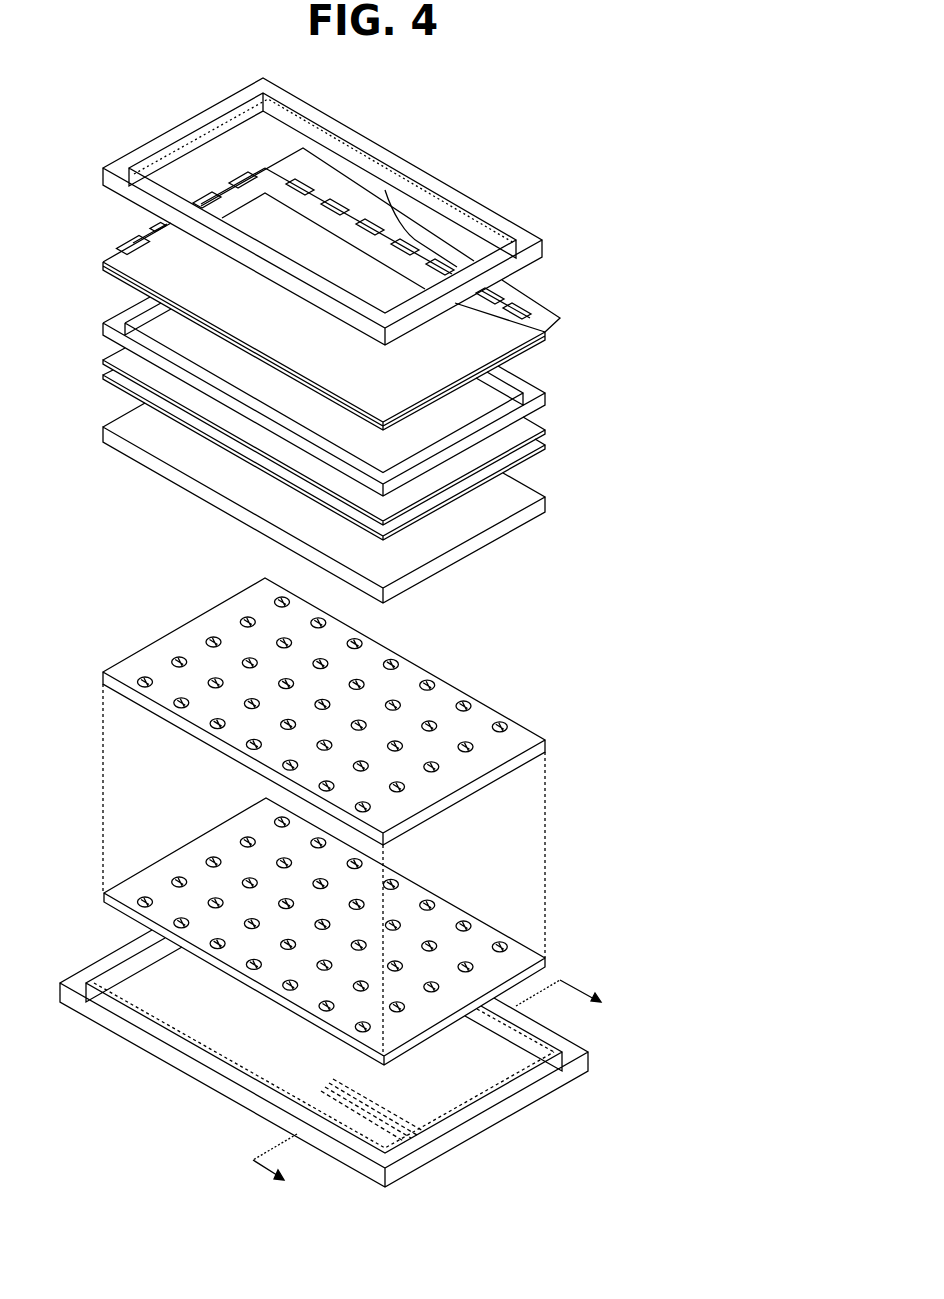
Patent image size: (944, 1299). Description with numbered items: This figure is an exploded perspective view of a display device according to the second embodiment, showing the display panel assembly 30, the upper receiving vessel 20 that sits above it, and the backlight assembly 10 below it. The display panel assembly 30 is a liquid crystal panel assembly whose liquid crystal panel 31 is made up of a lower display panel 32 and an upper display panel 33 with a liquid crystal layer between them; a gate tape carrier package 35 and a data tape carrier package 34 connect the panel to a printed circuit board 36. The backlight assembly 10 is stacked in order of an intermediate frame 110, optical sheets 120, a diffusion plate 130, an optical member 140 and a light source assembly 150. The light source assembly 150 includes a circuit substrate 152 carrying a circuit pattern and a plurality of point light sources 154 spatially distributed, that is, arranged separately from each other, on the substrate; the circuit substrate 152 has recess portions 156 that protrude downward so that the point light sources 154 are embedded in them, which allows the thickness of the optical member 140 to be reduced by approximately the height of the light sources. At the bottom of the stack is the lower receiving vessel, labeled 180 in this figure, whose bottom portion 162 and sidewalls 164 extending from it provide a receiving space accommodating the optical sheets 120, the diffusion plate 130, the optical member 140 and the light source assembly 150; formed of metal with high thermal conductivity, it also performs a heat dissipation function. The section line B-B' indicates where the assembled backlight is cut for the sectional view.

The backlight assembly 10 is at (368, 742).
The upper receiving vessel 20 is at (546, 246).
The display panel assembly 30 is at (368, 289).
The liquid crystal panel 31 is at (365, 289).
The lower display panel 32 is at (520, 338).
The upper display panel 33 is at (530, 348).
The data tape carrier package 34 is at (536, 305).
The gate tape carrier package 35 is at (120, 241).
The printed circuit board 36 is at (550, 322).
The intermediate frame 110 is at (548, 395).
The optical sheets 120 is at (550, 430).
The diffusion plate 130 is at (548, 499).
The optical member 140 is at (536, 720).
The light source assembly 150 is at (347, 921).
The circuit substrate 152 is at (222, 836).
The point light sources 154 is at (174, 878).
The recess portions 156 is at (249, 835).
The bottom portion 162 is at (186, 1017).
The sidewalls 164 is at (212, 1063).
The bottom chassis 180 is at (347, 1058).